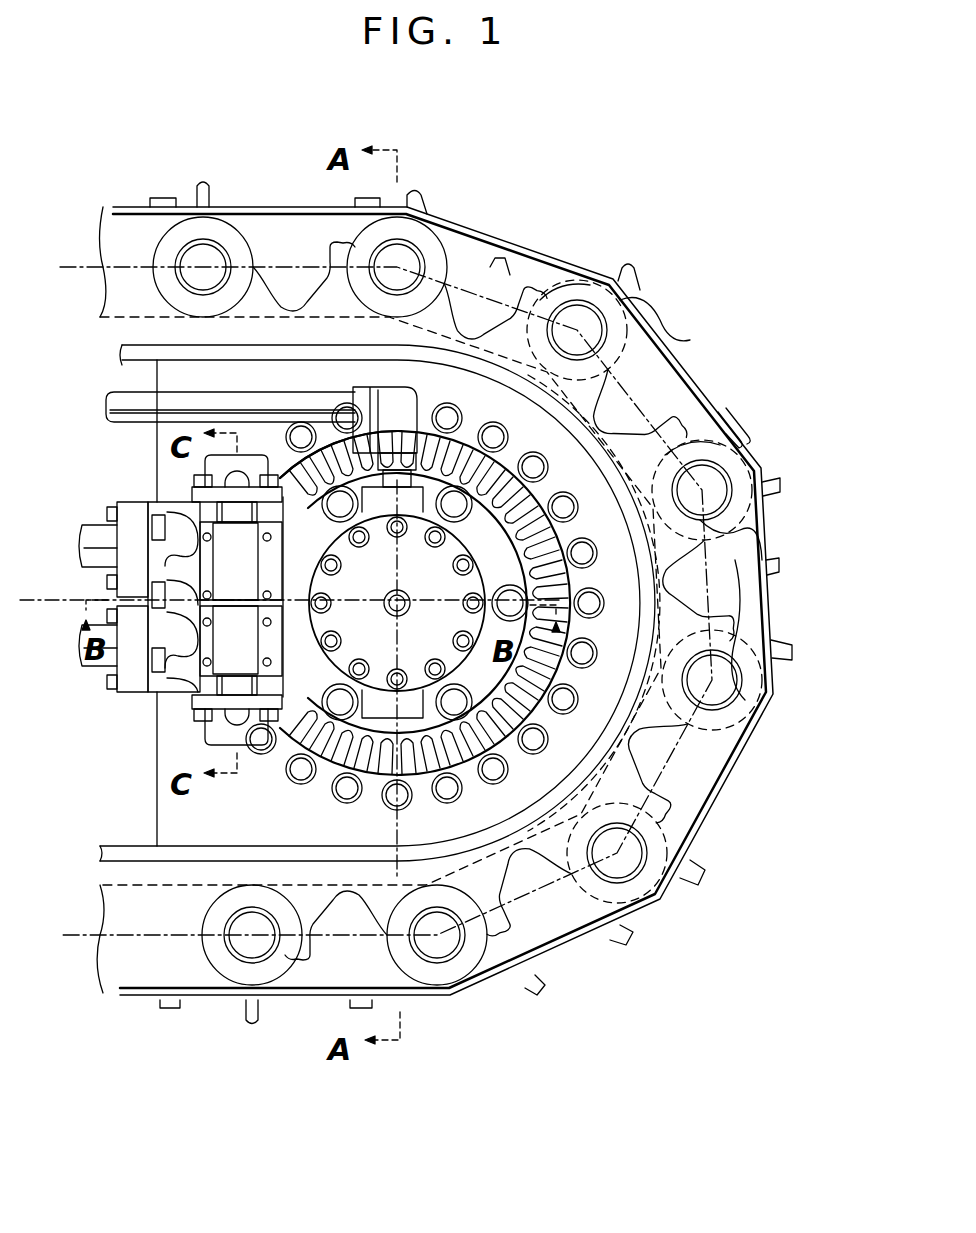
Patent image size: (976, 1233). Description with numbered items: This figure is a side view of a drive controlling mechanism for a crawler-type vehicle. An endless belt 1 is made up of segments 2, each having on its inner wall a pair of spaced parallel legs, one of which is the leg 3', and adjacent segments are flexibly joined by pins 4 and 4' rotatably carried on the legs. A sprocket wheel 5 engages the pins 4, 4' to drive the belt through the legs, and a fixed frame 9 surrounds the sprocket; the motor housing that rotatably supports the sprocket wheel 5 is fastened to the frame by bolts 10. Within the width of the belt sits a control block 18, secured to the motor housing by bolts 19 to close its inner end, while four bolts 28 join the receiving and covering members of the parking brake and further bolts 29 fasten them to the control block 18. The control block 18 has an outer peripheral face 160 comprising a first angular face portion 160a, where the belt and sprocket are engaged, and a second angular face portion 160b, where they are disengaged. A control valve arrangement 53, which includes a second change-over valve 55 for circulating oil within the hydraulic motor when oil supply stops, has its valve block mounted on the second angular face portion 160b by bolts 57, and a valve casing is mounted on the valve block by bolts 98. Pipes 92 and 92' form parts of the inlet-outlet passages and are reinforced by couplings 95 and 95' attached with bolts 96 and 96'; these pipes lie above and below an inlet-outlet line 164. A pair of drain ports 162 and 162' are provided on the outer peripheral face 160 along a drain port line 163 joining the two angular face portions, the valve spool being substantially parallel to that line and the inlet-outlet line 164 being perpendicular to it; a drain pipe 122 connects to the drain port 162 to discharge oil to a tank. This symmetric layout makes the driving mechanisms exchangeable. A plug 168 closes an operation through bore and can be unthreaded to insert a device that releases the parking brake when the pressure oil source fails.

The endless belt 1 is at (657, 334).
The segment 2 is at (754, 532).
The leg 3' is at (706, 499).
The pin 4 is at (577, 314).
The pin 4' is at (716, 483).
The sprocket wheel 5 is at (718, 412).
The fixed frame 9 is at (640, 645).
The bolt 10 is at (568, 695).
The control block 18 is at (541, 742).
The bolt 19 is at (509, 590).
The bolt 28 is at (397, 673).
The bolt 29 is at (460, 640).
The control valve arrangement 53 is at (300, 778).
The second change-over valve 55 is at (208, 712).
The bolt 57 is at (200, 632).
The pipe 92 is at (97, 522).
The pipe 92' is at (96, 677).
The coupling 95 is at (130, 511).
The coupling 95' is at (129, 692).
The bolt 96 is at (111, 519).
The bolt 96' is at (111, 682).
The bolt 98 is at (272, 661).
The drain pipe 122 is at (240, 398).
The outer peripheral face 160 is at (528, 660).
The first angular face portion 160a is at (464, 424).
The second angular face portion 160b is at (262, 748).
The drain port 162 is at (399, 437).
The drain port 162' is at (334, 808).
The drain port line 163 is at (396, 802).
The inlet-outlet line 164 is at (64, 601).
The plug 168 is at (452, 790).